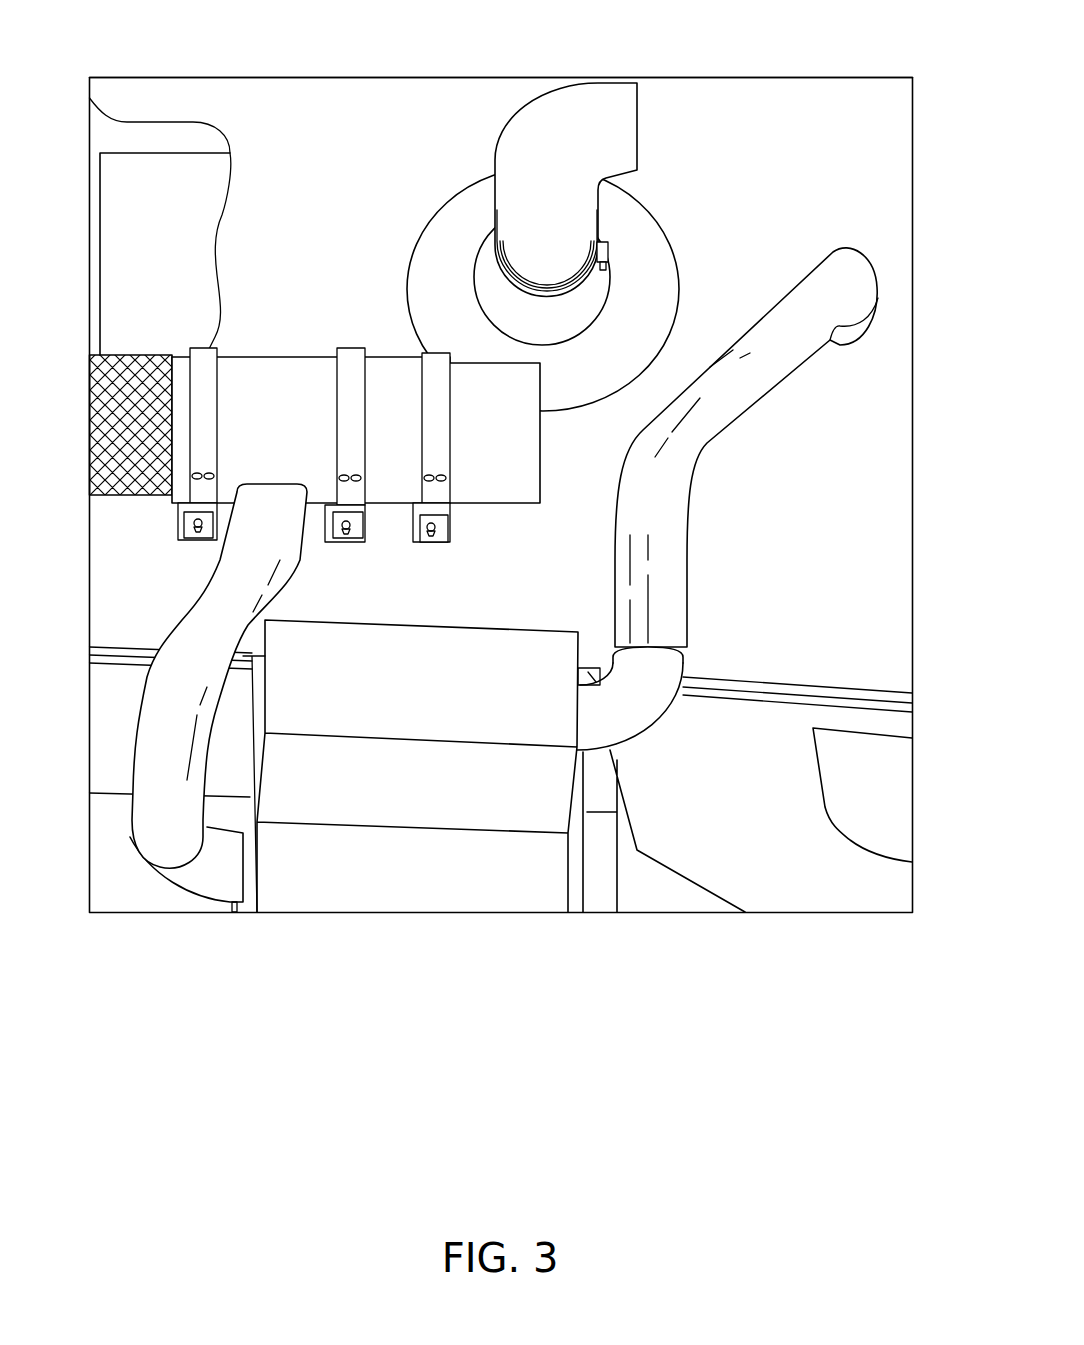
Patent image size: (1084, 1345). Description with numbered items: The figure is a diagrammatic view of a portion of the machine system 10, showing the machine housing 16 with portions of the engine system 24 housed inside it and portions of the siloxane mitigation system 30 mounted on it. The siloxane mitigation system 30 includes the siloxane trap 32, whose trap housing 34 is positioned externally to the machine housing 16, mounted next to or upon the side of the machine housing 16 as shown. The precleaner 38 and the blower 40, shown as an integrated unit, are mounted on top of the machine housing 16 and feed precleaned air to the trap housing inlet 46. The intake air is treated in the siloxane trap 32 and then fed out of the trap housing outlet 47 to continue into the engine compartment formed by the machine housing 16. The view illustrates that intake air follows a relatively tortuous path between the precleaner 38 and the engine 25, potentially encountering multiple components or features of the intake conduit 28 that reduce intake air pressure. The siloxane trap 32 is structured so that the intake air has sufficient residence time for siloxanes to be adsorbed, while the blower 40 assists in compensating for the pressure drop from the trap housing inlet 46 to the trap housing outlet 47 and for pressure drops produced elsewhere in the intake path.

The machine system 10 is at (933, 96).
The machine housing 16 is at (762, 77).
The engine system 24 is at (88, 202).
The engine 25 is at (123, 266).
The intake conduit 28 is at (768, 313).
The siloxane mitigation system 30 is at (606, 785).
The siloxane trap 32 is at (547, 892).
The trap housing 34 is at (305, 892).
The precleaner 38 is at (356, 416).
The blower 40 is at (285, 356).
The trap housing inlet 46 is at (228, 905).
The trap housing outlet 47 is at (592, 667).